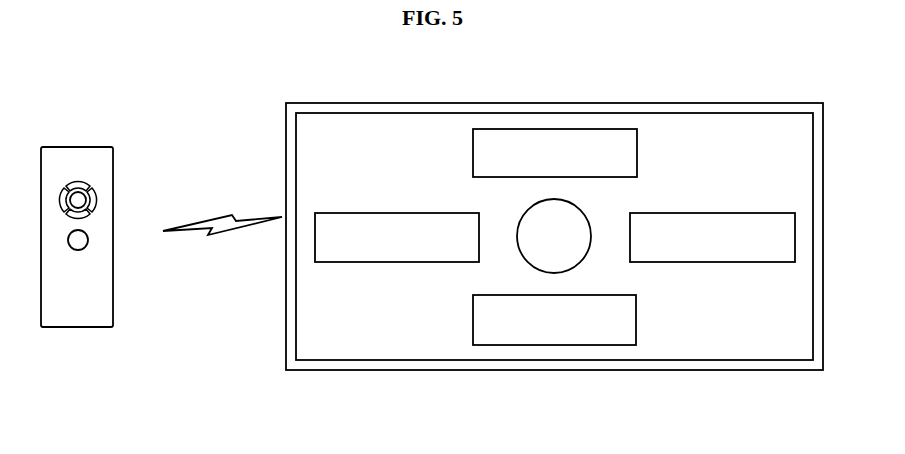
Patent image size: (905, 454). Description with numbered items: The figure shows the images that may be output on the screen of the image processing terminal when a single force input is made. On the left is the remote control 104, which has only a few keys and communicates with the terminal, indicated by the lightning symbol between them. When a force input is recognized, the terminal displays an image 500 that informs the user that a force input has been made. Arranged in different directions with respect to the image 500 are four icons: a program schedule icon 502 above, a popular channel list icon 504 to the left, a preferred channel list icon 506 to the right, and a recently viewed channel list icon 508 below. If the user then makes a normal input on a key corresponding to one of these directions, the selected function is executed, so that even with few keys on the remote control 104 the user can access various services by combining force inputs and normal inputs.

The remote control 104 is at (77, 147).
The image 500 is at (586, 256).
The program schedule icon 502 is at (565, 129).
The popular channel list icon 504 is at (387, 213).
The preferred channel list icon 506 is at (712, 213).
The recently viewed channel list icon 508 is at (552, 345).